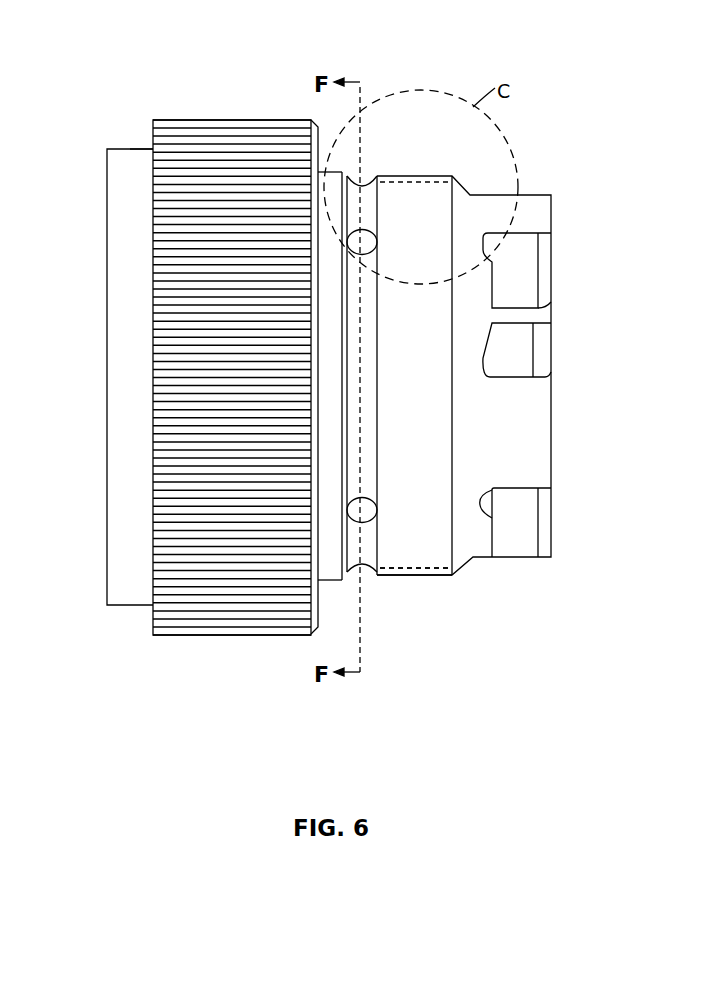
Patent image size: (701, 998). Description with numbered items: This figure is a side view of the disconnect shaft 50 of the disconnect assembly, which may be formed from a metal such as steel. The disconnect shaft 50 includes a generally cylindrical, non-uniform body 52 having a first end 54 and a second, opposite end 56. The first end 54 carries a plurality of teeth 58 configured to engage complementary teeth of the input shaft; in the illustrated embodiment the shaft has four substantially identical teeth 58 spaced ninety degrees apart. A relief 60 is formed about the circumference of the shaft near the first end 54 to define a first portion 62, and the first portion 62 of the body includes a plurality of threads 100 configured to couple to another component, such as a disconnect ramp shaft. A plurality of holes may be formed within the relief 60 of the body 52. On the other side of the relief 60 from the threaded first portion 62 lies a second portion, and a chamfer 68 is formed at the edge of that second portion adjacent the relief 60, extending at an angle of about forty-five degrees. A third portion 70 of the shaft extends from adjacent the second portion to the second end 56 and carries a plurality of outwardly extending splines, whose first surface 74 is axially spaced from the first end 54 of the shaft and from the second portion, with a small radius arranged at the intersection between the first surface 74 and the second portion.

The disconnect shaft 50 is at (104, 48).
The body 52 is at (192, 636).
The first end 54 is at (552, 240).
The second end 56 is at (106, 170).
The teeth 58 is at (549, 418).
The relief 60 is at (376, 175).
The first portion 62 is at (398, 578).
The chamfer 68 is at (314, 122).
The third portion 70 is at (148, 148).
The first surface 74 is at (320, 148).
The threads 100 is at (430, 567).